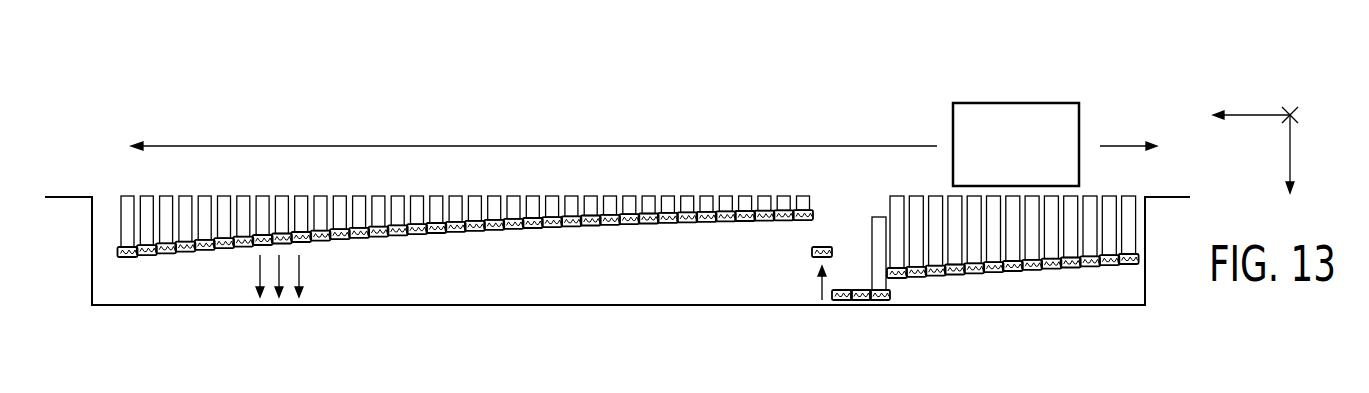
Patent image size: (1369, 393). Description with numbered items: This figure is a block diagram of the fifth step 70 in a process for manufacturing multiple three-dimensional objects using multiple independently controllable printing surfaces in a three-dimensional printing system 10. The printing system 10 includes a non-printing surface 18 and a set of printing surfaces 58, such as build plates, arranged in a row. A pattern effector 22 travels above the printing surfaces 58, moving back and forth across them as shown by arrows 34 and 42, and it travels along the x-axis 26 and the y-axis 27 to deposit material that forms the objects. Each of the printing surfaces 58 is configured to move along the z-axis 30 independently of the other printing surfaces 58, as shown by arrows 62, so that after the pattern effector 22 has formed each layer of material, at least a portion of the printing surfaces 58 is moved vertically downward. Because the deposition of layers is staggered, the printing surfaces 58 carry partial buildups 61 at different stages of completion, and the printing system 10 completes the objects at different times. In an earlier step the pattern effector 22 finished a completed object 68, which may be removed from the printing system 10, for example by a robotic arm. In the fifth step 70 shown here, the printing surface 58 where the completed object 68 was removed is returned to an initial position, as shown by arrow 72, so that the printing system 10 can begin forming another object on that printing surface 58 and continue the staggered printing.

The 3D printing system 10 is at (563, 49).
The non-printing surface 18 is at (1168, 196).
The pattern effector 22 is at (1018, 103).
The x-axis 26 is at (1252, 112).
The y-axis 27 is at (1297, 114).
The z-axis 30 is at (1296, 146).
The arrow 34 is at (1120, 143).
The arrow 42 is at (538, 146).
The printing surfaces 58 is at (570, 226).
The partial buildups 61 is at (397, 196).
The arrows 62 is at (262, 270).
The 3D object 68 is at (878, 216).
The fifth step 70 is at (1164, 118).
The arrow 72 is at (818, 290).